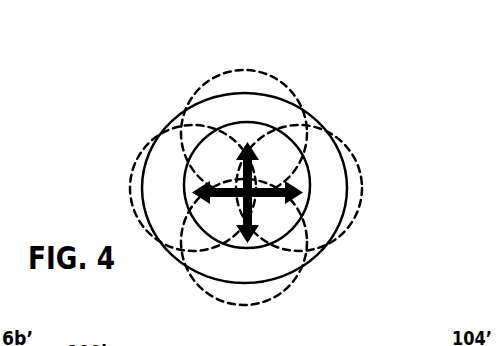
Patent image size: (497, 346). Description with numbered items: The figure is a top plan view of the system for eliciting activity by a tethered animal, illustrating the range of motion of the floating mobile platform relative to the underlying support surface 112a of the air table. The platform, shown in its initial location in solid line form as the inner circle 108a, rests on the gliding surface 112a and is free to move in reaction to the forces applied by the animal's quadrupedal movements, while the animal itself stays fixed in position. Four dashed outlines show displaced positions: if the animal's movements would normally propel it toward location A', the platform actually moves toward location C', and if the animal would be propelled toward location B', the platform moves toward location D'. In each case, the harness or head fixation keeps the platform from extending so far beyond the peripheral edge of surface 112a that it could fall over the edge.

The underlying support surface 112a is at (229, 163).
The inner element (movable lens) with displacement arrows 108a is at (230, 227).
The location B' is at (244, 102).
The location C' is at (273, 252).
The location D' is at (157, 188).
The location A' is at (323, 204).